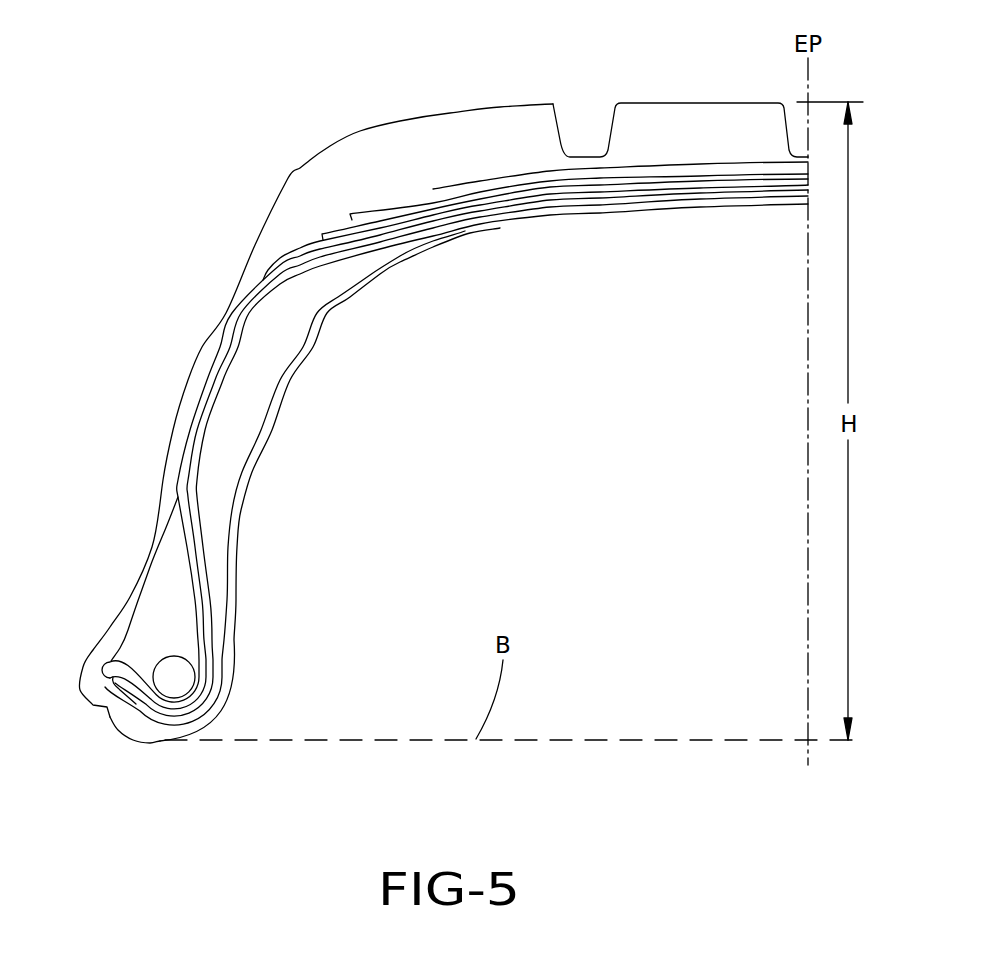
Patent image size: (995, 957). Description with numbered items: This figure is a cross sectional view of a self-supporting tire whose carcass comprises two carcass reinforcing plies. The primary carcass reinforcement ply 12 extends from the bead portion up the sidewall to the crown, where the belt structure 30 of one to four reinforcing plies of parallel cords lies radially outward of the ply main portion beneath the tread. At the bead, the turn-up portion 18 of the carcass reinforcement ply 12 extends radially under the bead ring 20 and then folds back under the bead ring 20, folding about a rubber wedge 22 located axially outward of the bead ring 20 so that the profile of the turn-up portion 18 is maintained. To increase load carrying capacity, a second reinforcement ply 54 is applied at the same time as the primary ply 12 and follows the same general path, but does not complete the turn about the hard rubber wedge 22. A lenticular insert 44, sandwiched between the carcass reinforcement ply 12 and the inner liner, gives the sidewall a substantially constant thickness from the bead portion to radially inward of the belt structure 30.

The carcass reinforcement ply 12 is at (247, 332).
The turn-up portion 18 is at (106, 670).
The bead ring 20 is at (170, 667).
The rubber wedge 22 is at (135, 688).
The belt structure 30 is at (437, 187).
The insert 44 is at (285, 330).
The second reinforcement ply 54 is at (197, 433).